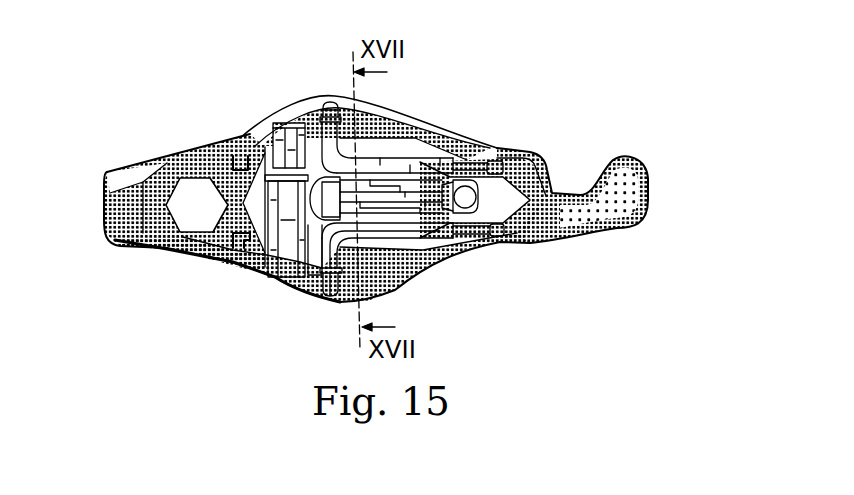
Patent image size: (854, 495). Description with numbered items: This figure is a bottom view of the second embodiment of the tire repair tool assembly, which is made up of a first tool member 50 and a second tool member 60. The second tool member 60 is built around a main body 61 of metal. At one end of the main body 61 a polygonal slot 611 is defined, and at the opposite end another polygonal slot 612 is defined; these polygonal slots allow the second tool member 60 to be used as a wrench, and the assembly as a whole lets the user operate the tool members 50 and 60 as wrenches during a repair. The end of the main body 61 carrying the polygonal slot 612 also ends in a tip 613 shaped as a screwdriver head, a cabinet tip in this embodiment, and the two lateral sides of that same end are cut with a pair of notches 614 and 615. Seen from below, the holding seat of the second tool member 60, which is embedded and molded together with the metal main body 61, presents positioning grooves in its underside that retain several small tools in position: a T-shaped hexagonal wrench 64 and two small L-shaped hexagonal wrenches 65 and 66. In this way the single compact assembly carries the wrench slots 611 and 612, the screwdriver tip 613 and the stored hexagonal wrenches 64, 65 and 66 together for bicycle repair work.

The first tool member 50 is at (348, 120).
The second tool member 60 is at (408, 130).
The main body 61 is at (512, 157).
The polygonal slot 611 is at (507, 207).
The polygonal slot 612 is at (183, 213).
The tip 613 is at (122, 210).
The notch 614 is at (240, 250).
The notch 615 is at (245, 160).
The T-shaped hexagonal wrench 64 is at (433, 197).
The L-shaped hexagonal wrench 65 is at (476, 228).
The L-shaped hexagonal wrench 66 is at (475, 160).